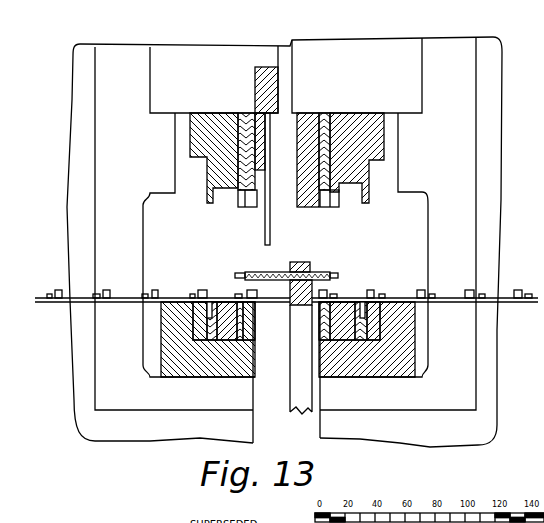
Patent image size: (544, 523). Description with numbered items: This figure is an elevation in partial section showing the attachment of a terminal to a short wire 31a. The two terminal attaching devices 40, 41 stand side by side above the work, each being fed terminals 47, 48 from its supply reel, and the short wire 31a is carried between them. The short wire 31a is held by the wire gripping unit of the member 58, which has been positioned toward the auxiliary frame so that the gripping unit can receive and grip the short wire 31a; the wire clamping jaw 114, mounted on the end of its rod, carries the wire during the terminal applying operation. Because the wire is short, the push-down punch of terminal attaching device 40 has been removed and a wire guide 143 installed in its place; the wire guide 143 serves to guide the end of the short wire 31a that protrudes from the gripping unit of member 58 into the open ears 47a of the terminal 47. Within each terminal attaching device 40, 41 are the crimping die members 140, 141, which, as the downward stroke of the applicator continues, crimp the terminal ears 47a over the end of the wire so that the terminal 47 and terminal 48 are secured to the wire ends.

The terminal attaching device 40 is at (203, 62).
The terminal attaching device 41 is at (365, 62).
The crimping die member 140 is at (250, 113).
The crimping die member 141 is at (238, 113).
The wire guide 143 is at (272, 230).
The short wire 31a is at (272, 274).
The wire clamping jaw 114 is at (312, 263).
The terminal 47 is at (136, 303).
The terminal ears 47a is at (252, 299).
The terminal 48 is at (500, 303).
The member 58 is at (302, 412).